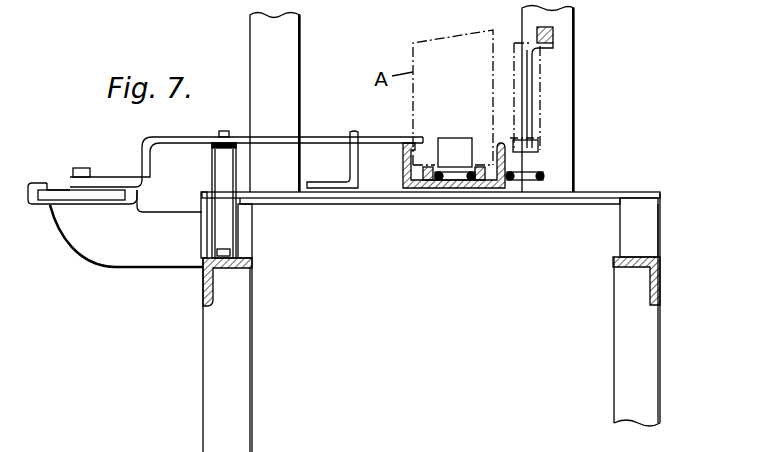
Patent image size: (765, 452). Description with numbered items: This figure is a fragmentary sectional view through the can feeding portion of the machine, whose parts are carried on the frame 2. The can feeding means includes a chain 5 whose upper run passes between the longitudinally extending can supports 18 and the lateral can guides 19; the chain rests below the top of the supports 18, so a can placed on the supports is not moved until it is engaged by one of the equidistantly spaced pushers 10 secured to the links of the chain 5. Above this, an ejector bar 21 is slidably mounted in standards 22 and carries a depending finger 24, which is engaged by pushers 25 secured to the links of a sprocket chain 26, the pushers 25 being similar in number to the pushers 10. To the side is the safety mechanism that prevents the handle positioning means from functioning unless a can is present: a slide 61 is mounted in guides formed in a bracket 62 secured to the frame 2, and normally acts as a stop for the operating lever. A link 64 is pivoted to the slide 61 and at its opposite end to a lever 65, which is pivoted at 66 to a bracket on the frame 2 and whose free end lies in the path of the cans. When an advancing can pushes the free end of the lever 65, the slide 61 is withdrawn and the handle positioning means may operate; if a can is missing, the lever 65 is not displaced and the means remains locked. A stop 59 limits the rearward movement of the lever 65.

The frame 2 is at (203, 322).
The chain 5 is at (455, 183).
The pushers 10 is at (458, 137).
The can supports 18 is at (425, 182).
The lateral can guides 19 is at (403, 162).
The ejector bar 21 is at (553, 33).
The standards 22 is at (300, 73).
The depending finger 24 is at (533, 100).
The pushers 25 is at (542, 148).
The sprocket chain 26 is at (541, 180).
The stop 59 is at (350, 158).
The slide 61 is at (57, 196).
The bracket 62 is at (126, 228).
The link 64 is at (68, 185).
The lever 65 is at (318, 137).
The pivot 66 is at (223, 131).